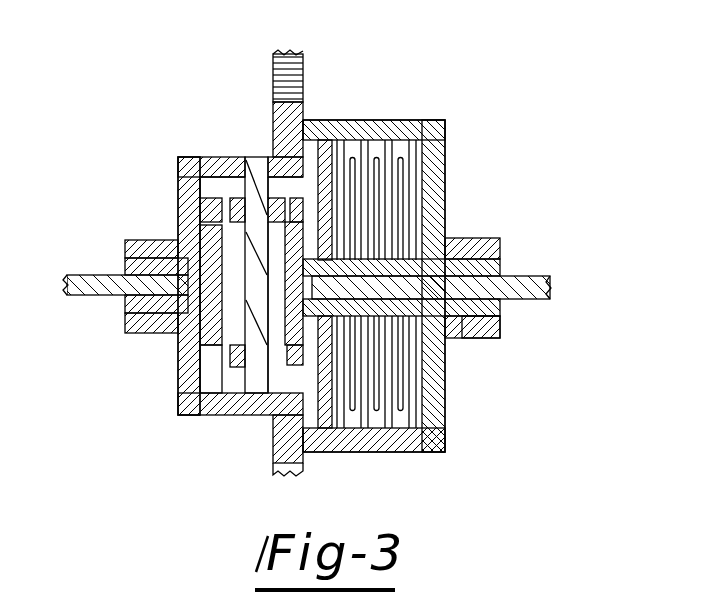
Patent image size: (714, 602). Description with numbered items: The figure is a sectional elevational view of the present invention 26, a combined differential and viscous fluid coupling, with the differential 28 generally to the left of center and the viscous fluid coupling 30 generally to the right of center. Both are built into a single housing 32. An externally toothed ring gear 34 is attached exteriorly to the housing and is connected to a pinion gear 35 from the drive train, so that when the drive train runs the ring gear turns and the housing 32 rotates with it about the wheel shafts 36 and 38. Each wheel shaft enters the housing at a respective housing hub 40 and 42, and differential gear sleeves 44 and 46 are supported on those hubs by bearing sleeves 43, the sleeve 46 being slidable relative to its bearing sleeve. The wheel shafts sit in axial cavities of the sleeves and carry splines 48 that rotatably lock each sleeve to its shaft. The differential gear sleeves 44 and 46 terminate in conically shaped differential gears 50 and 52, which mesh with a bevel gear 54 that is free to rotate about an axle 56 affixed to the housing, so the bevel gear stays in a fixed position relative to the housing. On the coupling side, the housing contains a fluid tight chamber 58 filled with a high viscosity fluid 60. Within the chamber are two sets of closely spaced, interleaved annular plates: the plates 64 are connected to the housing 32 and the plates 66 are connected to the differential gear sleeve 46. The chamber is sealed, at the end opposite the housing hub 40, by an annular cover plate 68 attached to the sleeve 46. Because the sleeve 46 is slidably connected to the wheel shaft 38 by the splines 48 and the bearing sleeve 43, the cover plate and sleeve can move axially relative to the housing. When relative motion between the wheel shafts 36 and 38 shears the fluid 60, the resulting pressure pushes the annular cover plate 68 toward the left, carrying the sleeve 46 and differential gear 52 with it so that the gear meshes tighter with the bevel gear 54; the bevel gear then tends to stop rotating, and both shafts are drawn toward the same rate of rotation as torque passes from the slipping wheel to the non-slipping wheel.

The combined differential and viscous fluid coupling 26 is at (473, 170).
The differential 28 is at (168, 406).
The viscous fluid coupling 30 is at (458, 454).
The housing 32 is at (180, 176).
The ring gear 34 is at (304, 100).
The pinion gear 35 is at (304, 58).
The wheel shaft 36 is at (92, 275).
The wheel shaft 38 is at (540, 276).
The housing hub 40 is at (140, 335).
The housing hub 42 is at (490, 238).
The bearing sleeve 43 is at (128, 258).
The differential gear sleeve 44 is at (125, 310).
The differential gear sleeve 46 is at (500, 308).
The splines 48 is at (160, 262).
The differential gear 50 is at (211, 350).
The differential gear 52 is at (266, 398).
The bevel gear 54 is at (224, 205).
The axle 56 is at (250, 372).
The fluid tight chamber 58 is at (445, 125).
The high viscosity fluid 60 is at (420, 200).
The annular plates 64 is at (405, 140).
The annular plates 66 is at (402, 410).
The annular cover plate 68 is at (290, 140).